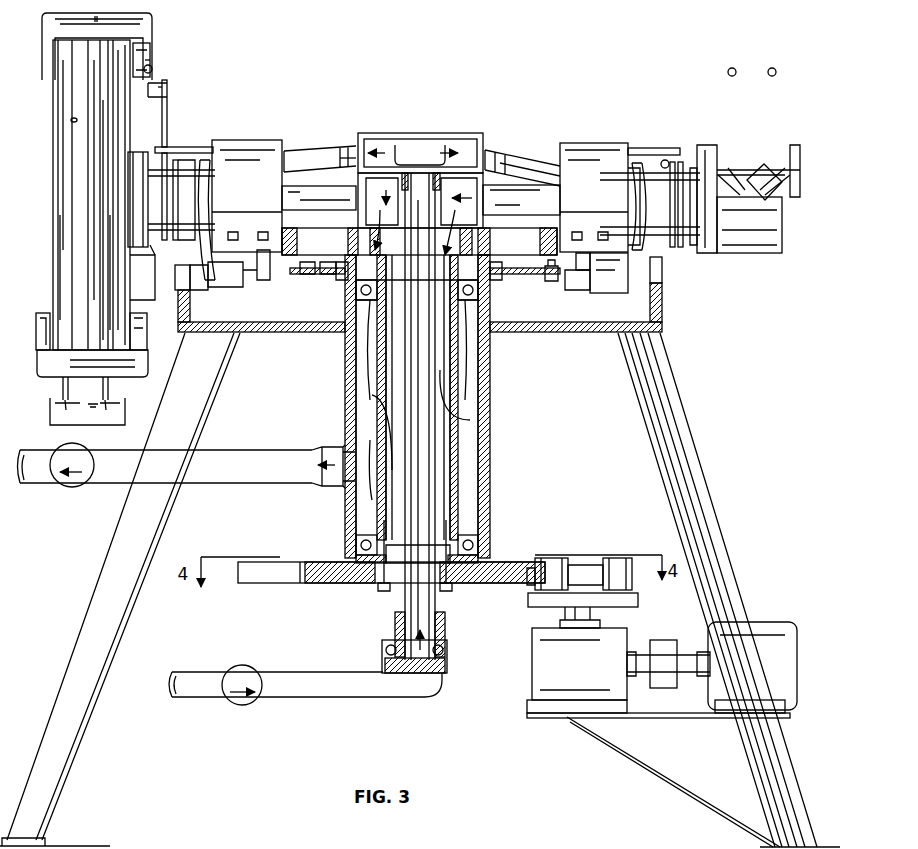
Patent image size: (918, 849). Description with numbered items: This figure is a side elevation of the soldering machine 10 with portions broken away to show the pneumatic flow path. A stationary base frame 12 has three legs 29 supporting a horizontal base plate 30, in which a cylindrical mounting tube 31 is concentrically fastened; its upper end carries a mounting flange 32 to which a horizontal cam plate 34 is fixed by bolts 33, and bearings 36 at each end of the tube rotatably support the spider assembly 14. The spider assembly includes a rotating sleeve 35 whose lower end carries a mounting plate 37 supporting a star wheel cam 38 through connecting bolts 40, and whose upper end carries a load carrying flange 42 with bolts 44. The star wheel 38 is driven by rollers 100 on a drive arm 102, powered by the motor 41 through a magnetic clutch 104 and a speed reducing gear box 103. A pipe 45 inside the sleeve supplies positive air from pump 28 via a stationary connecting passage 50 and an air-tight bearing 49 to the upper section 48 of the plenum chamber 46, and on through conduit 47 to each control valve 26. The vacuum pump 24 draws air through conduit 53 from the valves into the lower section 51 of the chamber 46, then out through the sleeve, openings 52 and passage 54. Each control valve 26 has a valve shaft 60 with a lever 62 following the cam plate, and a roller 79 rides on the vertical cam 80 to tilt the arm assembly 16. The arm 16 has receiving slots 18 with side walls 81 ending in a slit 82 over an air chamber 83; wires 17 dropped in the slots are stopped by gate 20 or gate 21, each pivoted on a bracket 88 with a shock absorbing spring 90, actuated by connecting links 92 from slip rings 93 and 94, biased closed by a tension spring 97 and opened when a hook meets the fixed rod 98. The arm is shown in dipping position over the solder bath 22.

The soldering machine 10 is at (748, 345).
The stationary base frame 12 is at (680, 400).
The spider assembly 14 is at (598, 105).
The arm assembly 16 is at (180, 70).
The wire 17 is at (68, 390).
The receiving slot 18 is at (735, 175).
The gate 20 is at (152, 22).
The gate 21 is at (148, 365).
The solder bath 22 is at (100, 420).
The pneumatic pump 24 is at (72, 487).
The control valve 26 is at (252, 140).
The pump 28 is at (250, 665).
The legs 29 is at (105, 672).
The base plate 30 is at (248, 340).
The mounting tube 31 is at (490, 425).
The mounting flange 32 is at (345, 280).
The bolts 33 is at (520, 292).
The cam plate 34 is at (500, 280).
The rotating sleeve 35 is at (462, 362).
The bearings 36 is at (480, 300).
The mounting plate 37 is at (455, 525).
The star wheel cam 38 is at (300, 585).
The connecting bolts 40 is at (387, 590).
The motor 41 is at (782, 620).
The load carrying flange 42 is at (290, 150).
The bolts 44 is at (395, 173).
The pipe 45 is at (432, 608).
The plenum chamber 46 is at (425, 133).
The conduit 47 is at (300, 150).
The upper section 48 is at (410, 140).
The air-tight bearing 49 is at (447, 645).
The connecting passage 50 is at (372, 693).
The lower section 51 is at (458, 175).
The openings 52 is at (372, 402).
The conduit 53 is at (295, 190).
The passage 54 is at (225, 452).
The valve shaft 60 is at (580, 290).
The lever 62 is at (270, 287).
The roller 79 is at (175, 212).
The vertical cam 80 is at (662, 312).
The side walls 81 is at (62, 153).
The slit 82 is at (72, 120).
The air chamber 83 is at (765, 230).
The bracket 88 is at (150, 60).
The shock absorbing spring 90 is at (150, 25).
The connecting link 92 is at (166, 120).
The slip ring 93 is at (674, 250).
The slip ring 94 is at (680, 250).
The tension spring 97 is at (665, 160).
The fixed rod 98 is at (200, 148).
The rollers 100 is at (628, 560).
The drive arm 102 is at (540, 600).
The gear box 103 is at (557, 670).
The magnetic clutch 104 is at (668, 650).